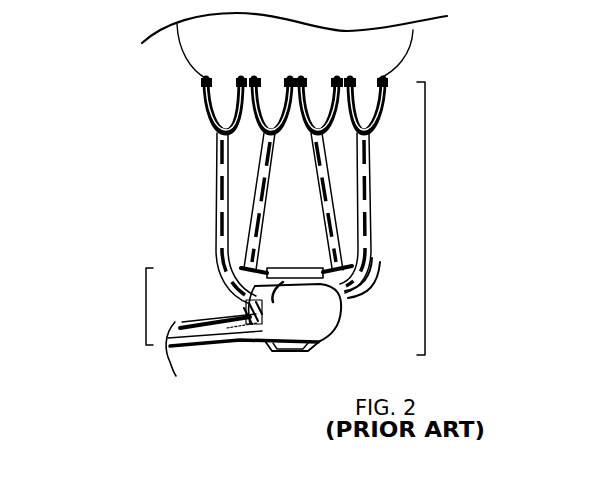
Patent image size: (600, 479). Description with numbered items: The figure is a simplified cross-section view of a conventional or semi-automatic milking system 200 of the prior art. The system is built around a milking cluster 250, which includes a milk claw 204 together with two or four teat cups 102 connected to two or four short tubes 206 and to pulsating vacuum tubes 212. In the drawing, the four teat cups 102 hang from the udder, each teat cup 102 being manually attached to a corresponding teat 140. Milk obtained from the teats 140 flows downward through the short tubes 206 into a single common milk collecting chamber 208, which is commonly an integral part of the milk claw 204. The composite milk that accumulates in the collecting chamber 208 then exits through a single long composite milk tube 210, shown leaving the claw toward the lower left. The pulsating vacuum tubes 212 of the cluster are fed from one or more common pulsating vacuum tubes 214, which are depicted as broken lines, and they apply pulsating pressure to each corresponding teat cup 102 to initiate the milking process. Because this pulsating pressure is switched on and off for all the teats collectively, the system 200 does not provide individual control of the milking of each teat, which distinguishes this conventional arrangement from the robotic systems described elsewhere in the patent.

The conventional or semi-automatic milking system 200 is at (102, 52).
The teat 140 is at (363, 107).
The teat cup 102 is at (210, 95).
The short tube 206 is at (215, 221).
The milking cluster 250 is at (448, 218).
The milk claw 204 is at (228, 305).
The milk collecting chamber 208 is at (319, 321).
The pulsating vacuum tube 212 is at (358, 262).
The common pulsating vacuum tube 214 is at (250, 313).
The long composite milk tube 210 is at (190, 350).